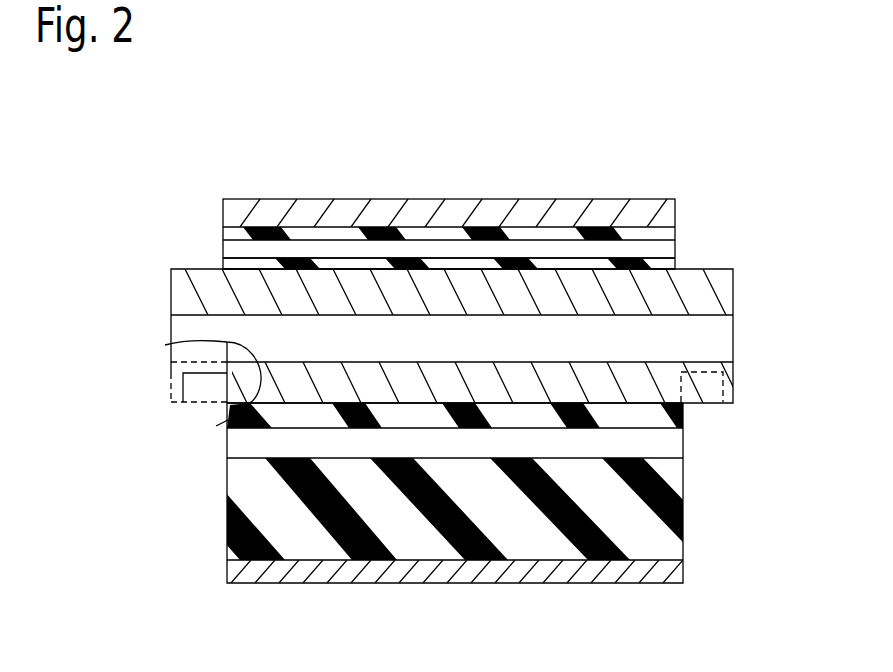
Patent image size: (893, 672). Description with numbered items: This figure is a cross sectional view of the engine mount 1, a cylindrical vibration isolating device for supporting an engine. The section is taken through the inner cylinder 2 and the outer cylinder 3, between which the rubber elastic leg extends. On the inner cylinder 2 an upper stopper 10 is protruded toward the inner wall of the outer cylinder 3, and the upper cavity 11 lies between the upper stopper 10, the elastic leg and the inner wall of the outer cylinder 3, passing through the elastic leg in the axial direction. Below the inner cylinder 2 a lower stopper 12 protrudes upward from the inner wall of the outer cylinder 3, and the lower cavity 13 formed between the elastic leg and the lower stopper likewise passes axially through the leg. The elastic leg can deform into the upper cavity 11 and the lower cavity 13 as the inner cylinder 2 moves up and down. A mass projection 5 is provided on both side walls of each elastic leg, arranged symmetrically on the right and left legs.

The engine mount 1 is at (169, 176).
The inner cylinder 2 is at (170, 289).
The outer cylinder 3 is at (497, 208).
The mass projection 5 is at (195, 390).
The upper stopper 10 is at (670, 262).
The upper cavity 11 is at (663, 243).
The lower stopper 12 is at (672, 478).
The lower cavity 13 is at (670, 443).